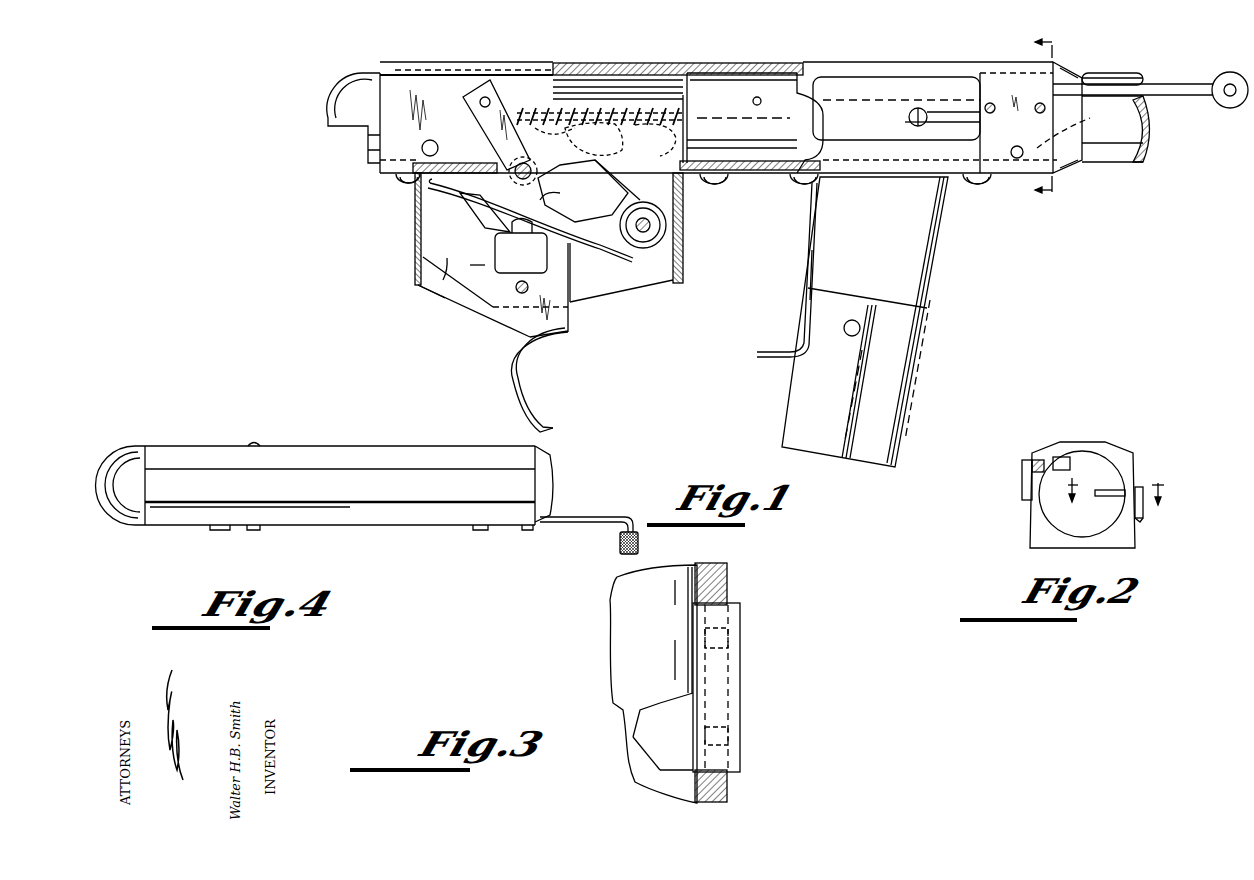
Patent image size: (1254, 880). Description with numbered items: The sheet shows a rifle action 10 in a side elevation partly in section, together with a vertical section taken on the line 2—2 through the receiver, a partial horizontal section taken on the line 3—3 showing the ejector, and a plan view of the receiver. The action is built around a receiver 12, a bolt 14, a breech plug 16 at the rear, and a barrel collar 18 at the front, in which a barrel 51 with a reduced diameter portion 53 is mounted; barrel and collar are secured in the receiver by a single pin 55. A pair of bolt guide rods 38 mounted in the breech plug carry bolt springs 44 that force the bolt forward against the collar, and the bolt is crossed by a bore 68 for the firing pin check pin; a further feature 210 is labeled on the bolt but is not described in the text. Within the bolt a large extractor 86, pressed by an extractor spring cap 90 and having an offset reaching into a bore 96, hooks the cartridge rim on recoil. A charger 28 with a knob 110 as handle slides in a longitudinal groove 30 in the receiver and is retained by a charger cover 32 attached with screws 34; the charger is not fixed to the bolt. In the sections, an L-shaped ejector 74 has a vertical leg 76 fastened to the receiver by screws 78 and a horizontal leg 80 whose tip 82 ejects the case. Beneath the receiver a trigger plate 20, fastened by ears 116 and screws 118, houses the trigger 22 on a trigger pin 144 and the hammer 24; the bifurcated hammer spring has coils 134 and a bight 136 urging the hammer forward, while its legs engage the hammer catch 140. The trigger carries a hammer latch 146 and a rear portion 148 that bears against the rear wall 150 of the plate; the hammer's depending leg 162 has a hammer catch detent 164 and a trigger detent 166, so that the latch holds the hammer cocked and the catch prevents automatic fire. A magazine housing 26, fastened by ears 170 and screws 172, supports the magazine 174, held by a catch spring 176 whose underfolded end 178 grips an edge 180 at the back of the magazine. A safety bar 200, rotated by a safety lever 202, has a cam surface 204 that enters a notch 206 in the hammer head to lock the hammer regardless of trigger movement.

In FIG. 1, the rifle action 10 is at (350, 222).
In FIG. 1, the receiver 12 is at (722, 52).
In FIG. 4, the receiver 12 is at (352, 452).
In FIG. 1, the bolt 14 is at (760, 70).
In FIG. 1, the breech plug 16 is at (338, 110).
In FIG. 4, the breech plug 16 is at (130, 452).
In FIG. 1, the barrel collar 18 is at (1095, 165).
In FIG. 4, the barrel collar 18 is at (552, 485).
In FIG. 1, the trigger plate 20 is at (418, 282).
In FIG. 1, the trigger 22 is at (575, 320).
In FIG. 1, the hammer 24 is at (621, 261).
In FIG. 1, the magazine housing 26 is at (945, 270).
In FIG. 1, the charger 28 is at (1160, 97).
In FIG. 4, the charger 28 is at (570, 524).
In FIG. 2, the longitudinal groove 30 is at (1040, 458).
In FIG. 2, the charger cover 32 is at (1022, 470).
In FIG. 1, the screws 34 is at (445, 132).
In FIG. 4, the screws 34 is at (525, 531).
In FIG. 1, the bolt guide rods 38 is at (630, 108).
In FIG. 1, the bolt springs 44 is at (655, 140).
In FIG. 1, the barrel 51 is at (1122, 76).
In FIG. 1, the reduced diameter portion 53 is at (1076, 123).
In FIG. 1, the pin 55 is at (1017, 158).
In FIG. 1, the bore 68 is at (762, 100).
In FIG. 2, the ejector 74 is at (1143, 488).
In FIG. 3, the ejector 74 is at (740, 675).
In FIG. 2, the vertical leg 76 is at (1143, 520).
In FIG. 3, the screws 78 is at (740, 640).
In FIG. 3, the horizontal leg 80 is at (676, 665).
In FIG. 3, the tip 82 is at (632, 710).
In FIG. 1, the extractor 86 is at (940, 116).
In FIG. 1, the extractor spring cap 90 is at (912, 110).
In FIG. 1, the bore 96 is at (905, 123).
In FIG. 1, the knob 110 is at (1228, 106).
In FIG. 4, the knob 110 is at (618, 544).
In FIG. 1, the ears 116 is at (395, 178).
In FIG. 1, the screws 118 is at (408, 182).
In FIG. 1, the coils 134 is at (638, 250).
In FIG. 1, the bight 136 is at (617, 184).
In FIG. 1, the hammer catch 140 is at (468, 198).
In FIG. 1, the trigger pin 144 is at (518, 293).
In FIG. 1, the hammer latch 146 is at (565, 200).
In FIG. 1, the rear portion 148 is at (425, 285).
In FIG. 1, the rear wall 150 is at (415, 245).
In FIG. 1, the leg 162 is at (594, 139).
In FIG. 1, the hammer catch detent 164 is at (464, 269).
In FIG. 1, the trigger detent 166 is at (521, 246).
In FIG. 1, the ears 170 is at (795, 180).
In FIG. 1, the screws 172 is at (812, 182).
In FIG. 1, the magazine 174 is at (910, 368).
In FIG. 1, the catch spring 176 is at (785, 288).
In FIG. 1, the underfolded end 178 is at (830, 300).
In FIG. 1, the edge 180 is at (815, 280).
In FIG. 4, the safety bar 200 is at (255, 532).
In FIG. 1, the safety lever 202 is at (492, 82).
In FIG. 4, the safety lever 202 is at (222, 532).
In FIG. 1, the cam surface 204 is at (530, 168).
In FIG. 1, the notch 206 is at (555, 136).
In FIG. 1, the bolt recess 210 is at (823, 80).
In FIG. 1, the section line 2— 2 is at (1056, 119).
In FIG. 2, the section line 3— 3 is at (1115, 500).